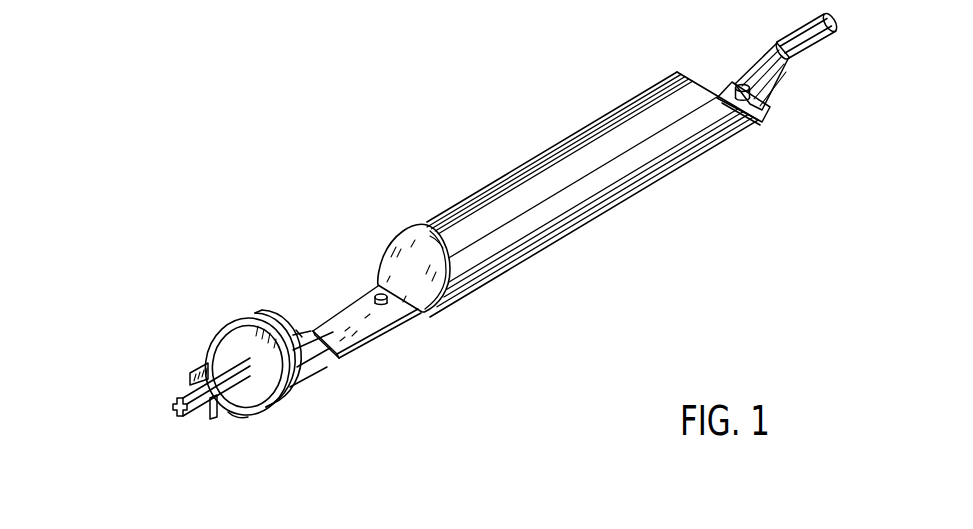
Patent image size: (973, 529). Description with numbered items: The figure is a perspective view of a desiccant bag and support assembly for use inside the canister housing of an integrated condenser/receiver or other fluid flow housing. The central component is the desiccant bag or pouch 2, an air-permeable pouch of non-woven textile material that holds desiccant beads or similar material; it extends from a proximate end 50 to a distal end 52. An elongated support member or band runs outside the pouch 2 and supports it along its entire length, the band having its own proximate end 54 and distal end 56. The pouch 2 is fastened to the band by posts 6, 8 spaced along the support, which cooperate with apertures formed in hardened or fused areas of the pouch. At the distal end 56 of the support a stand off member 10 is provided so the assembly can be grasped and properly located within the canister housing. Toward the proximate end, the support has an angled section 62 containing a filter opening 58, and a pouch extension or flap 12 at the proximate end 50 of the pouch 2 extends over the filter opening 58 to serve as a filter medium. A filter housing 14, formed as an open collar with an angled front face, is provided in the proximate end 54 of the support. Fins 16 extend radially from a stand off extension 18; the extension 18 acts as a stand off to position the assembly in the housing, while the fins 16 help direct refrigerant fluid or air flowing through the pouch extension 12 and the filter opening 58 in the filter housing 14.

The desiccant bag or pouch 2 is at (567, 177).
The post 6 is at (397, 303).
The post 8 is at (757, 113).
The stand off member 10 is at (838, 44).
The pouch extension or flap 12 is at (300, 333).
The filter housing 14 is at (305, 358).
The fins 16 is at (192, 372).
The stand off extension 18 is at (173, 400).
The proximate end 50 is at (363, 325).
The distal end 52 is at (750, 110).
The proximate end 54 is at (230, 332).
The distal end 56 is at (775, 86).
The filter opening 58 is at (239, 418).
The angled section 62 is at (300, 333).